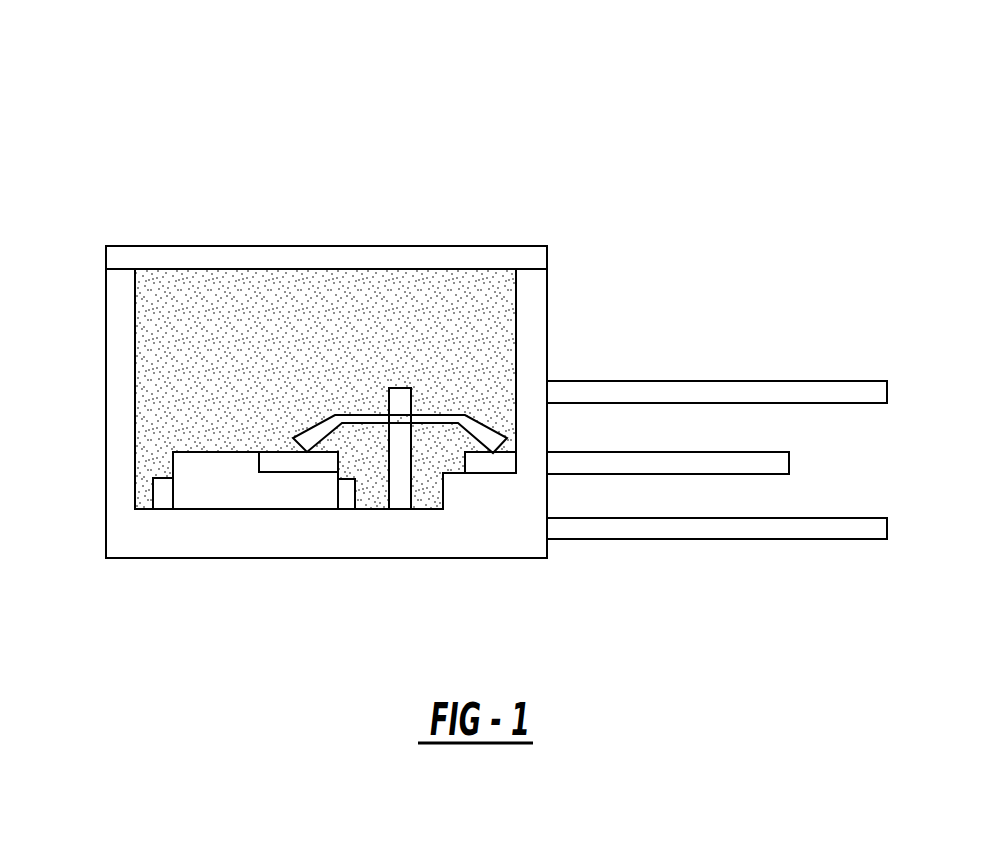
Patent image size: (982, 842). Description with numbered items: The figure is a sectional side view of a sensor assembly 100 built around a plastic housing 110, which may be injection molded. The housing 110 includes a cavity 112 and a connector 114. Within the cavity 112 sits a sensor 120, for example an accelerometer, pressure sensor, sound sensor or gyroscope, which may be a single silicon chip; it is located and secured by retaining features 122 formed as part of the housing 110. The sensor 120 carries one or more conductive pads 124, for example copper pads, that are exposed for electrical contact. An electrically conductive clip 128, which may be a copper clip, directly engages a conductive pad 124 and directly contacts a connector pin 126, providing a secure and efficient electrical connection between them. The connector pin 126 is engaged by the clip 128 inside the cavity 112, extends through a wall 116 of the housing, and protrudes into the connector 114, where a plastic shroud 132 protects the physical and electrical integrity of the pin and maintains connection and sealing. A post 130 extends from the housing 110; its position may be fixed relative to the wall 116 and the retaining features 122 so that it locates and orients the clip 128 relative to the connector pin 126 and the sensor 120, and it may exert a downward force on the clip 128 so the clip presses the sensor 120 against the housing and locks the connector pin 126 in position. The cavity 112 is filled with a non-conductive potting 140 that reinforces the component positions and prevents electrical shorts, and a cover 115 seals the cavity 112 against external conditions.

The sensor assembly 100 is at (400, 98).
The housing 110 is at (106, 348).
The cavity 112 is at (407, 250).
The connector 114 is at (782, 370).
The cover 115 is at (192, 246).
The wall 116 is at (548, 301).
The sensor 120 is at (228, 452).
The retaining features 122 is at (158, 478).
The conductive pads 124 is at (275, 452).
The connector pin 126 is at (632, 457).
The conductive clip 128 is at (448, 413).
The post 130 is at (400, 388).
The plastic shroud 132 is at (633, 381).
The potting 140 is at (246, 320).